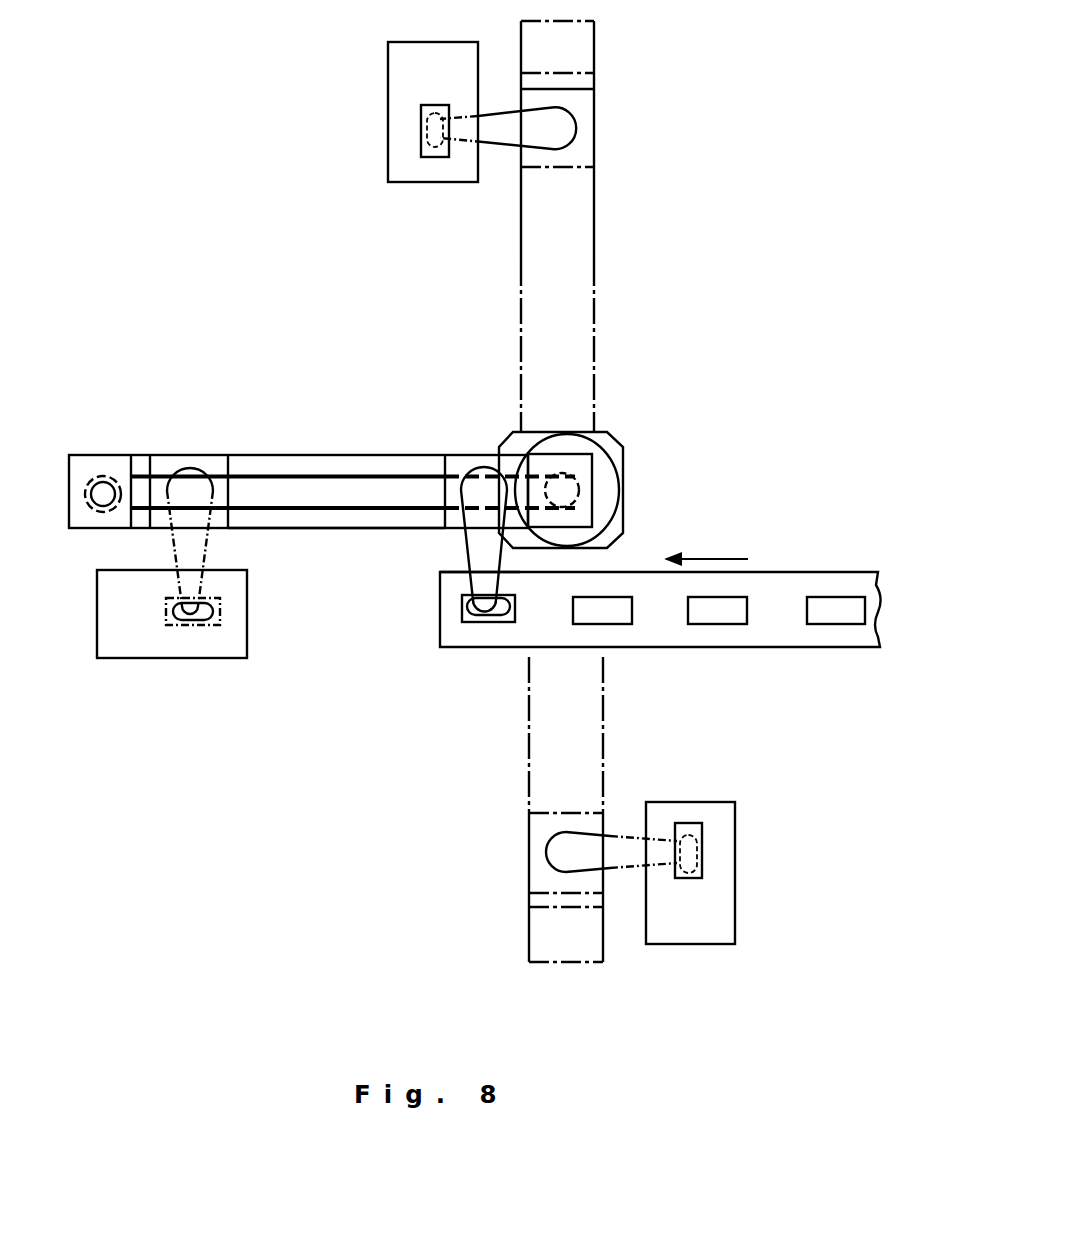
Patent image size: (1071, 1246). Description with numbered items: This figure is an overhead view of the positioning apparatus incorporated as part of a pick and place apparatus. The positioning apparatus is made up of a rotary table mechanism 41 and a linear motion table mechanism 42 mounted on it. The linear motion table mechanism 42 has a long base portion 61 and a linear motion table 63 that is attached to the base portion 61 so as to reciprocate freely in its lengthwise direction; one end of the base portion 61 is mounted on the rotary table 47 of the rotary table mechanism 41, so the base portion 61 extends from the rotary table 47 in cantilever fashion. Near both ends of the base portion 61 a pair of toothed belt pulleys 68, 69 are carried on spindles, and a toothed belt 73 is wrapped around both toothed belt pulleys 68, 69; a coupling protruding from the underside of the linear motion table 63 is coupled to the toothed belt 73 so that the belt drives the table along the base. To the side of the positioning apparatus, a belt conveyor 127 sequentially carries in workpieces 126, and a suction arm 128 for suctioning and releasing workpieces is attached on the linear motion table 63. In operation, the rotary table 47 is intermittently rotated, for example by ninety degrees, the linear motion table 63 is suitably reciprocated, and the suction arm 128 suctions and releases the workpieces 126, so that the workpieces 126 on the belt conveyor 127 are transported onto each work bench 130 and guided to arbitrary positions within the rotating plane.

The rotary table mechanism 41 is at (628, 446).
The linear motion table mechanism 42 is at (605, 208).
The rotary table 47 is at (608, 485).
The base portion 61 is at (313, 519).
The linear motion table 63 is at (583, 118).
The toothed belt pulley 68 is at (556, 480).
The toothed belt pulley 69 is at (101, 486).
The toothed belt 73 is at (370, 477).
The workpiece 126 is at (421, 152).
The belt conveyor 127 is at (828, 564).
The suction arm 128 is at (468, 581).
The work bench 130 is at (398, 88).